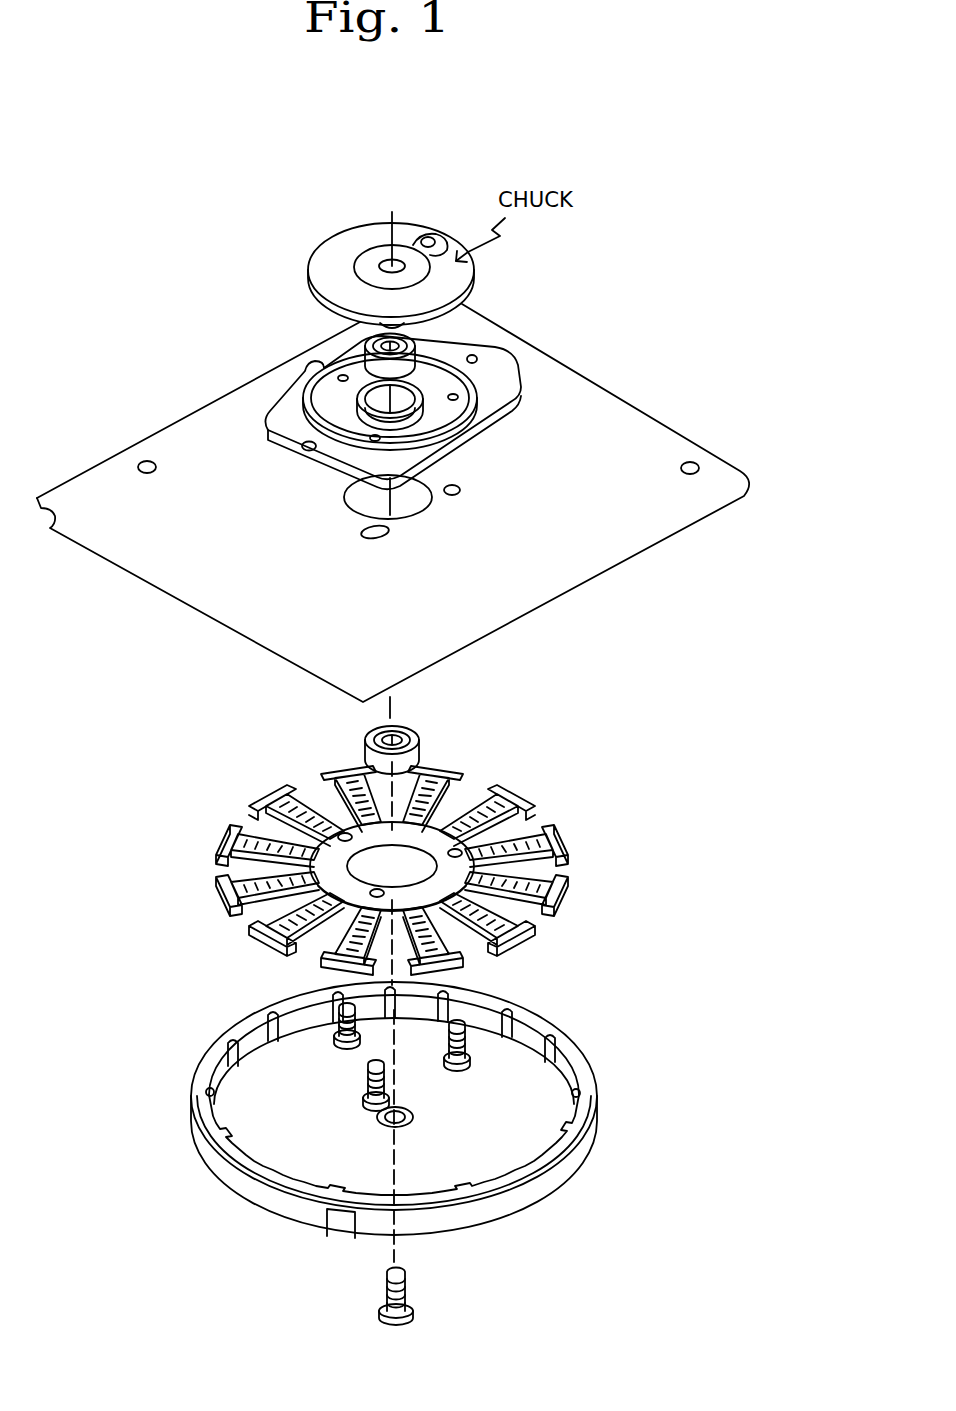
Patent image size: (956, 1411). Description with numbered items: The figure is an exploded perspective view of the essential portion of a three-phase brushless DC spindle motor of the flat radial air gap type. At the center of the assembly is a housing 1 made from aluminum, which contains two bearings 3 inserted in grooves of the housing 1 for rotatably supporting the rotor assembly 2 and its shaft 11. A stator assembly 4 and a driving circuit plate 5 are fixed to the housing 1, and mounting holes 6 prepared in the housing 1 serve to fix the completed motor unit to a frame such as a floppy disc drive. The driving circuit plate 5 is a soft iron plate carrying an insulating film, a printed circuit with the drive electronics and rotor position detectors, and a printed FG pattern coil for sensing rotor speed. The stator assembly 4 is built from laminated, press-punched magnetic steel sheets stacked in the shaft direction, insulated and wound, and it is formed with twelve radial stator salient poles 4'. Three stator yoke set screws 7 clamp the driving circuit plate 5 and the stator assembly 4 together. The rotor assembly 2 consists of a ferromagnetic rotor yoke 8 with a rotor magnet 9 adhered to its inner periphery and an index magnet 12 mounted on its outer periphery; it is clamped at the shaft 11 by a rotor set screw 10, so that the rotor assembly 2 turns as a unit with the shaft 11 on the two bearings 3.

The housing 1 is at (280, 403).
The rotor assembly 2 is at (565, 1190).
The bearings 3 is at (425, 340).
The stator assembly 4 is at (334, 870).
The radial stator salient poles 4' is at (527, 791).
The driving circuit plate 5 is at (177, 450).
The mounting holes 6 is at (478, 359).
The stator yoke set screws 7 is at (470, 1037).
The rotor yoke 8 is at (592, 1137).
The rotor magnet 9 is at (580, 1067).
The rotor set screw 10 is at (417, 1283).
The shaft 11 is at (386, 236).
The index magnet 12 is at (342, 1222).